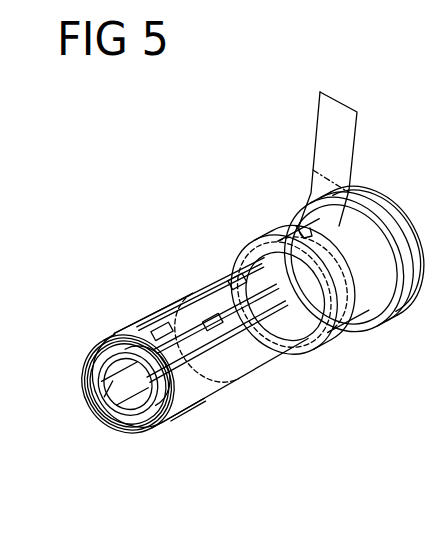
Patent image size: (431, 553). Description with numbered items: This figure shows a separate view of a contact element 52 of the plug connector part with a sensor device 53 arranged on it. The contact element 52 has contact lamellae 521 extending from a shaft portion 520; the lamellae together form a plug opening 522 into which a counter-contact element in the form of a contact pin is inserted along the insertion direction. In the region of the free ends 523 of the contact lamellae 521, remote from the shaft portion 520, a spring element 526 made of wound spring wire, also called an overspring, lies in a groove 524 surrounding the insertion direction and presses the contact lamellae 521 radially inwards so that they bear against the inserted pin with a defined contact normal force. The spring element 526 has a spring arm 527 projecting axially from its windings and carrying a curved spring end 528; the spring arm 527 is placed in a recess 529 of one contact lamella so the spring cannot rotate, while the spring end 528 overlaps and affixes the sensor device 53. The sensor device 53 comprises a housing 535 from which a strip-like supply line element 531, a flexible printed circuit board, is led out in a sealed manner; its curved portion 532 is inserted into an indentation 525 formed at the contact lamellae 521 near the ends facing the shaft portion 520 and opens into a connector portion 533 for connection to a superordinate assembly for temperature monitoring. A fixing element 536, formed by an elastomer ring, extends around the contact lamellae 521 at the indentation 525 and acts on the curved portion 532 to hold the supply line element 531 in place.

The contact element 52 is at (255, 390).
The sensor device 53 is at (155, 312).
The shaft portion 520 is at (385, 308).
The contact lamellae 521 is at (193, 360).
The plug opening 522 is at (113, 390).
The free ends 523 is at (136, 417).
The groove 524 is at (120, 333).
The indentation 525 is at (317, 323).
The spring element 526 is at (169, 410).
The spring arm 527 is at (174, 346).
The spring end 528 is at (186, 300).
The recess 529 is at (212, 330).
The supply line element 531 is at (252, 270).
The curved portion 532 is at (303, 233).
The connector portion 533 is at (347, 134).
The housing 535 is at (219, 293).
The fixing element 536 is at (322, 338).